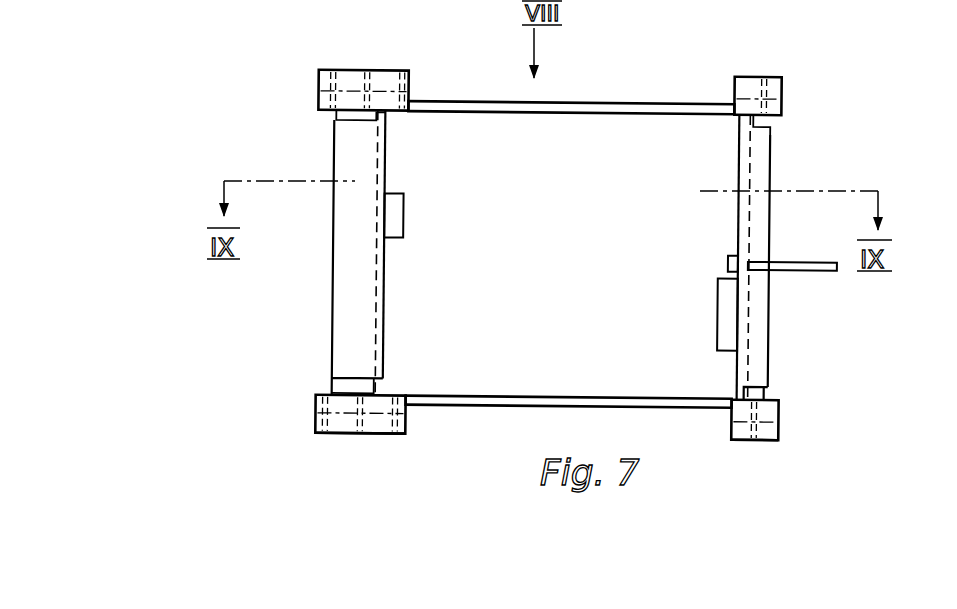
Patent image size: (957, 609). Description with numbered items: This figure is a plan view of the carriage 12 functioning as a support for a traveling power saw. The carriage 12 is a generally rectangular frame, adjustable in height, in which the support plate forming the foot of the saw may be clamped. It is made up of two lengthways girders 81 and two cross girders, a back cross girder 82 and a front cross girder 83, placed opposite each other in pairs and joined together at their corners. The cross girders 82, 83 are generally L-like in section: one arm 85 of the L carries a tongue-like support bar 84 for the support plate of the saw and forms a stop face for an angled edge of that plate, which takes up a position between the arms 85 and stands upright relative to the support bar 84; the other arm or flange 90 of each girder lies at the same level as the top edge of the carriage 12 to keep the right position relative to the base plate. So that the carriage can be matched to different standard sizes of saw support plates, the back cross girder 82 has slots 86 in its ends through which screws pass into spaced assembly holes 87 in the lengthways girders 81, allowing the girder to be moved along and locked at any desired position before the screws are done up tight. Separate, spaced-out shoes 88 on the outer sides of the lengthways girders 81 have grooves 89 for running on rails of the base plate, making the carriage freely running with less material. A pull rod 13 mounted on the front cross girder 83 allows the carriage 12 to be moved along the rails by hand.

The carriage 12 is at (681, 66).
The pull rod 13 is at (810, 266).
The lengthways girders 81 is at (611, 101).
The back cross girder 82 is at (388, 289).
The front cross girder 83 is at (735, 220).
The support bar 84 is at (395, 216).
The arm 85 is at (383, 172).
The slots 86 is at (337, 125).
The assembly holes 87 is at (395, 433).
The shoes 88 is at (310, 426).
The grooves 89 is at (400, 437).
The flange 90 is at (340, 283).